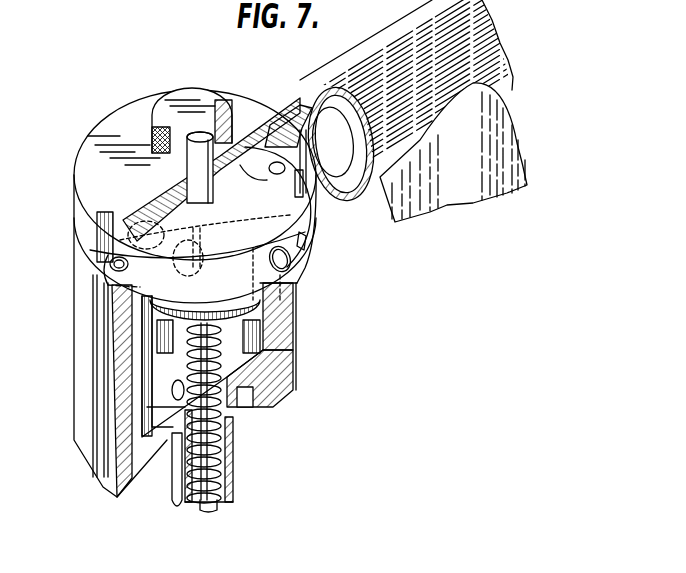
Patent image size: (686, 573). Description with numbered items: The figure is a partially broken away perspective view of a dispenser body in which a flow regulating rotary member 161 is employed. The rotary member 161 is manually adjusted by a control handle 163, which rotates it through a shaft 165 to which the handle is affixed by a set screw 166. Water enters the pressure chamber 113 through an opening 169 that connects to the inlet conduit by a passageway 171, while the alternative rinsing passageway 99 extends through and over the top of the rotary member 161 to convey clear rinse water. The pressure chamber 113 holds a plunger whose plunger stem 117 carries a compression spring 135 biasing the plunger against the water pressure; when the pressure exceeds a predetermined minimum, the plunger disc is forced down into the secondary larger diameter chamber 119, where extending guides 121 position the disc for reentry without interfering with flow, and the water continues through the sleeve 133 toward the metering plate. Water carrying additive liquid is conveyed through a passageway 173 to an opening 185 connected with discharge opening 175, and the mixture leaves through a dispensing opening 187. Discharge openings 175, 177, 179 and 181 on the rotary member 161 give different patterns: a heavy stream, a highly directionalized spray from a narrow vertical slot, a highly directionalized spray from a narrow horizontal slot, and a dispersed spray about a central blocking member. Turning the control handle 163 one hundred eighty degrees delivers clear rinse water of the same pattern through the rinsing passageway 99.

The alternative rinsing passageway 99 is at (280, 185).
The pressure chamber 113 is at (147, 297).
The plunger stem 117 is at (208, 498).
The secondary larger diameter chamber 119 is at (157, 407).
The extending guides 121 is at (250, 348).
The sleeve 133 is at (170, 477).
The compression spring 135 is at (233, 418).
The flow regulating rotary member 161 is at (291, 270).
The control handle 163 is at (175, 108).
The shaft 165 is at (237, 150).
The set screw 166 is at (237, 125).
The opening 169 is at (118, 215).
The passageway 171 is at (197, 262).
The passageway 173 is at (83, 312).
The discharge opening 175 is at (112, 268).
The discharge opening 177 is at (303, 192).
The discharge opening 179 is at (303, 246).
The discharge opening 181 is at (291, 295).
The opening 185 is at (108, 285).
The dispensing opening 187 is at (112, 265).